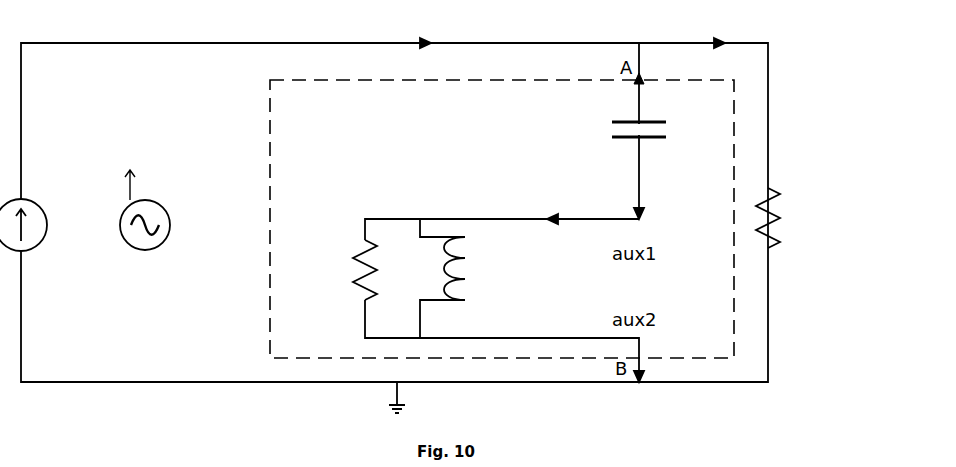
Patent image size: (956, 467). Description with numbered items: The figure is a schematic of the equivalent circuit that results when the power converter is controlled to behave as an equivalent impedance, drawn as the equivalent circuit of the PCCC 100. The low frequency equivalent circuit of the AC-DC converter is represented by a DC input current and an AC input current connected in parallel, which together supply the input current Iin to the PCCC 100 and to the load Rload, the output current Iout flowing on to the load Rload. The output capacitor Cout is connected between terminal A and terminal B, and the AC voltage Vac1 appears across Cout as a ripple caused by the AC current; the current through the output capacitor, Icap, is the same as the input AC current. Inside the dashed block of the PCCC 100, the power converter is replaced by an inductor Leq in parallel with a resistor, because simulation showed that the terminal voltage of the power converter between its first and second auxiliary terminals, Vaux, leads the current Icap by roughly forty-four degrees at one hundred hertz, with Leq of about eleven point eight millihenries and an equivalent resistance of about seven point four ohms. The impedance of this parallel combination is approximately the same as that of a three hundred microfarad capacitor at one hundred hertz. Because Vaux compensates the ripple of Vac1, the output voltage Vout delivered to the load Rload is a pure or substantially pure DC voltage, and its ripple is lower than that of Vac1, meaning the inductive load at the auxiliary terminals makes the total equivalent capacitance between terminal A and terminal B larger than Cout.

The PCCC 100 is at (320, 358).
The input current Iin is at (417, 33).
The output current Iout is at (707, 32).
The output capacitor Cout is at (616, 131).
The AC voltage across Cout Vac1 is at (684, 124).
The current through the output capacitor Icap is at (655, 204).
The equivalent inductor Leq is at (463, 278).
The terminal voltage of the power converter Vaux is at (555, 287).
The load Rload is at (790, 218).
The output voltage Vout is at (871, 229).